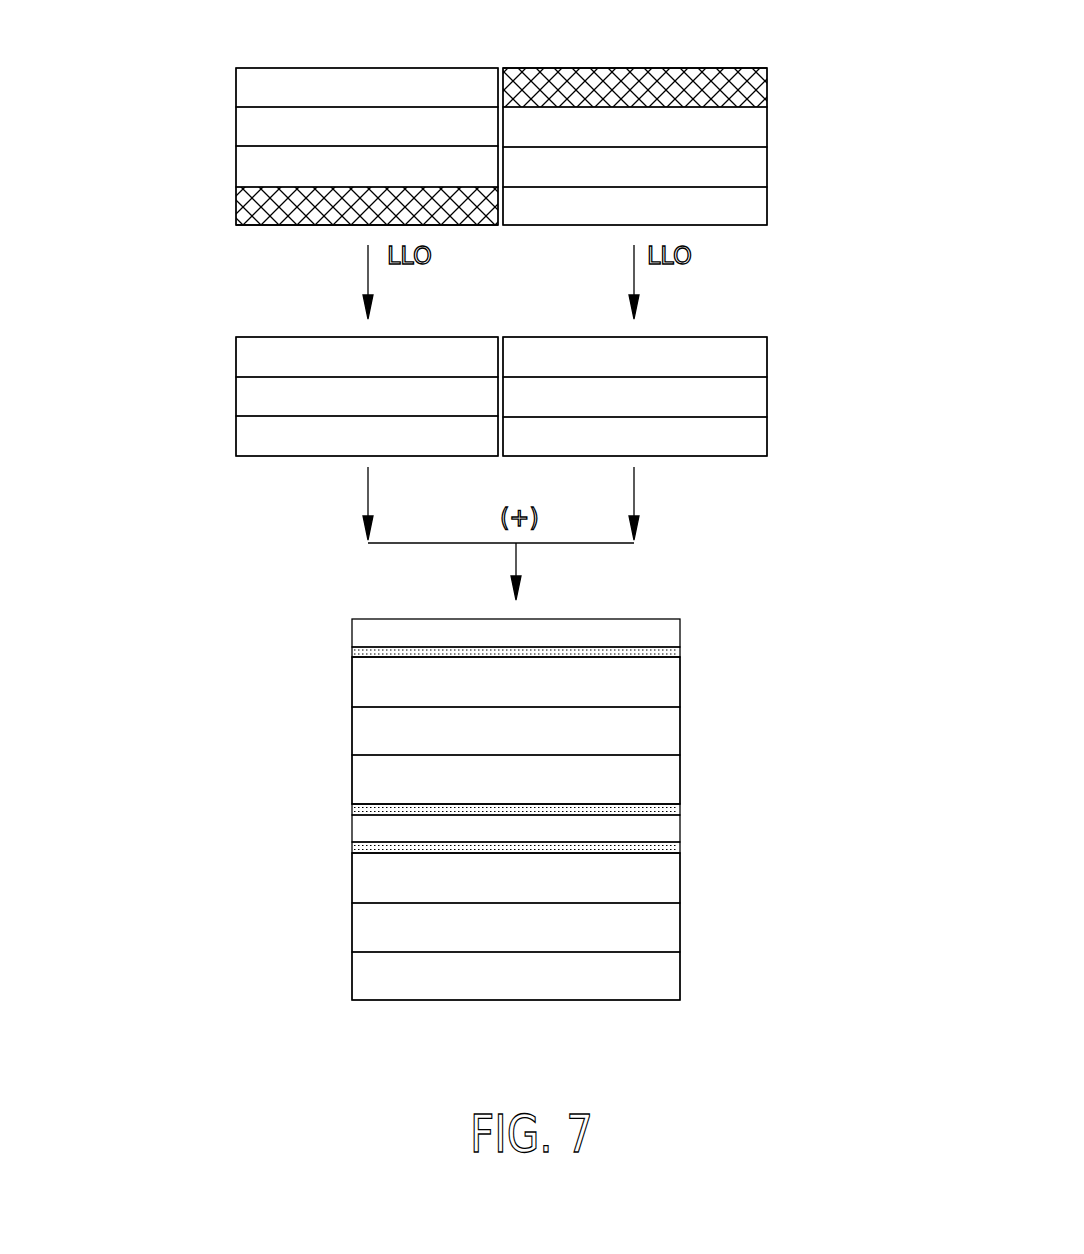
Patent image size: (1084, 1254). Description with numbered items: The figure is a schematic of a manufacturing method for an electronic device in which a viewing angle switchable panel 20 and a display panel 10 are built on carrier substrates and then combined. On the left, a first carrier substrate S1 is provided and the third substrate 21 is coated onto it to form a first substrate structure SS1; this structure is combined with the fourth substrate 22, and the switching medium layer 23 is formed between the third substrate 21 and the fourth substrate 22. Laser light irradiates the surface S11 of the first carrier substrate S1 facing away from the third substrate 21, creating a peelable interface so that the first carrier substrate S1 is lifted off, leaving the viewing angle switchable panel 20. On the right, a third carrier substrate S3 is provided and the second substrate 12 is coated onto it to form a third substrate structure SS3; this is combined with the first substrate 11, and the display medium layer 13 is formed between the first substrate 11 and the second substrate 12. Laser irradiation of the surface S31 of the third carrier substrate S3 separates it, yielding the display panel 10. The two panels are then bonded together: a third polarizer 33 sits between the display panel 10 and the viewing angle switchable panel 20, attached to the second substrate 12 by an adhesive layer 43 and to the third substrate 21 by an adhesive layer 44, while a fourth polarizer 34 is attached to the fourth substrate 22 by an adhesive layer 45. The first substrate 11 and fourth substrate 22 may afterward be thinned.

The display panel 10 is at (892, 328).
The first substrate 11 is at (767, 205).
The second substrate 12 is at (767, 127).
The display medium layer 13 is at (767, 165).
The viewing angle switchable panel 20 is at (107, 338).
The third substrate 21 is at (236, 167).
The fourth substrate 22 is at (236, 87).
The switching medium layer 23 is at (236, 127).
The third polarizer 33 is at (680, 827).
The fourth polarizer 34 is at (680, 632).
The adhesive layer 43 is at (352, 847).
The adhesive layer 44 is at (352, 809).
The adhesive layer 45 is at (352, 651).
The first carrier substrate S1 is at (236, 205).
The surface of first carrier substrate S11 is at (278, 226).
The third carrier substrate S3 is at (767, 87).
The surface of third carrier substrate S31 is at (738, 68).
The first substrate structure SS1 is at (105, 135).
The third substrate structure SS3 is at (893, 60).